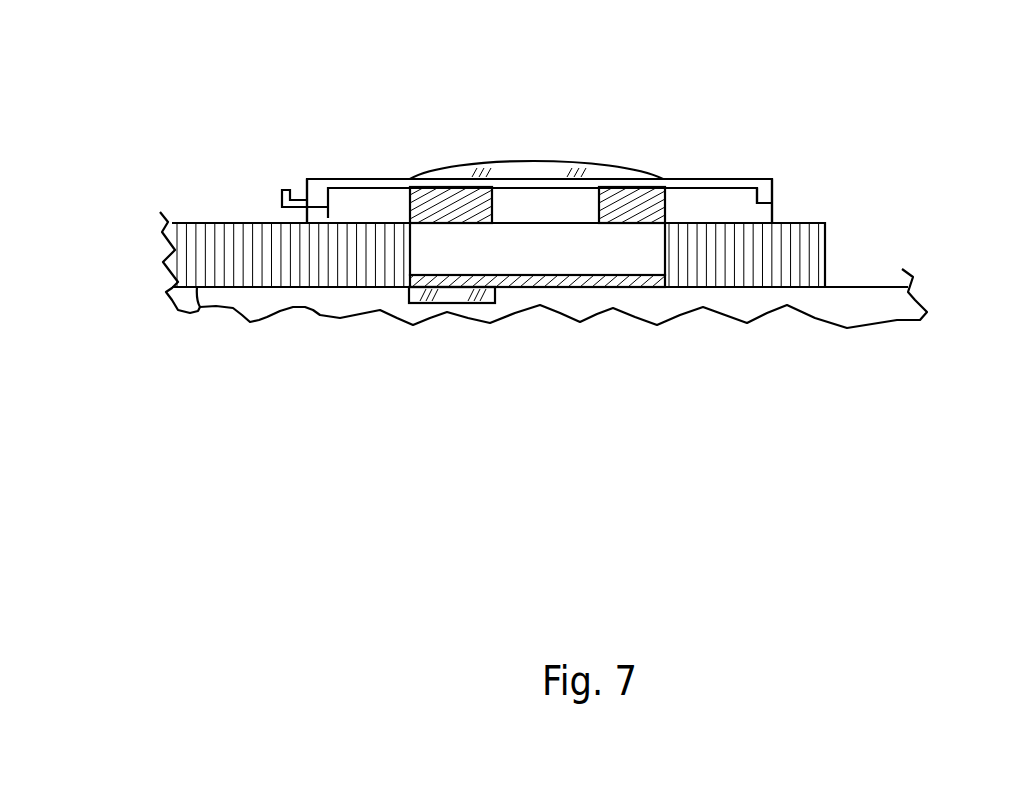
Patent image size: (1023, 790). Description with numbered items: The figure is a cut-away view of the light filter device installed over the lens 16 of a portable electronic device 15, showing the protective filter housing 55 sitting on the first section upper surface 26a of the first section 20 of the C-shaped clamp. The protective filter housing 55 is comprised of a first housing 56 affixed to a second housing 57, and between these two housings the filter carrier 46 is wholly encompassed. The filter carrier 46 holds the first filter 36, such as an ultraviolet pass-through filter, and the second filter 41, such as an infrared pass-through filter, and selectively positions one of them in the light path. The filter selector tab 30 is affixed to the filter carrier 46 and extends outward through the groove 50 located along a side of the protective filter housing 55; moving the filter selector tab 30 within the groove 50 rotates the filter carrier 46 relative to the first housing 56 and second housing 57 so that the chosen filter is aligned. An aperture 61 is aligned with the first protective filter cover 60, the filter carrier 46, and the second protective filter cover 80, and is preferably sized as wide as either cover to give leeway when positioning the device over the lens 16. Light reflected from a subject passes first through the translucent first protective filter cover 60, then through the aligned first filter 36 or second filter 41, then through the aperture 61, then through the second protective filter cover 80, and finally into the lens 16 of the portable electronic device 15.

The portable electronic device 15 is at (202, 347).
The portable electronic device lens 16 is at (447, 295).
The first section 20 is at (828, 265).
The first section upper surface 26a is at (812, 223).
The filter selector tab 30 is at (282, 193).
The first filter 36 is at (460, 195).
The second filter 41 is at (637, 203).
The filter carrier 46 is at (370, 205).
The groove 50 is at (305, 198).
The protective filter housing 55 is at (545, 140).
The first housing 56 is at (773, 180).
The second housing 57 is at (747, 217).
The first protective filter cover 60 is at (608, 167).
The aperture 61 is at (527, 258).
The second protective filter cover 80 is at (633, 288).